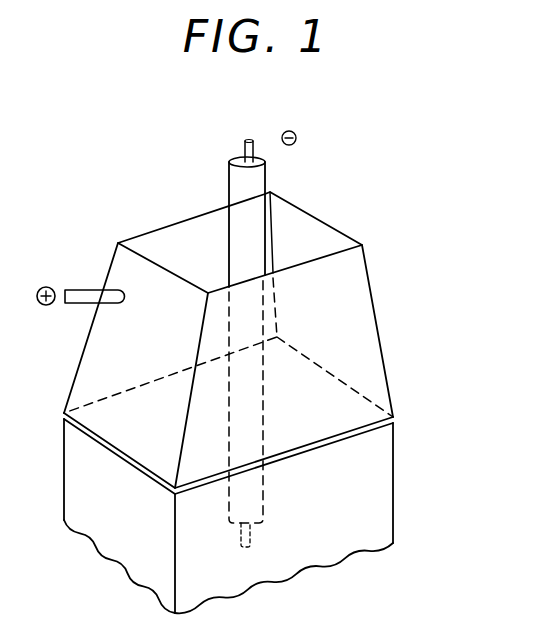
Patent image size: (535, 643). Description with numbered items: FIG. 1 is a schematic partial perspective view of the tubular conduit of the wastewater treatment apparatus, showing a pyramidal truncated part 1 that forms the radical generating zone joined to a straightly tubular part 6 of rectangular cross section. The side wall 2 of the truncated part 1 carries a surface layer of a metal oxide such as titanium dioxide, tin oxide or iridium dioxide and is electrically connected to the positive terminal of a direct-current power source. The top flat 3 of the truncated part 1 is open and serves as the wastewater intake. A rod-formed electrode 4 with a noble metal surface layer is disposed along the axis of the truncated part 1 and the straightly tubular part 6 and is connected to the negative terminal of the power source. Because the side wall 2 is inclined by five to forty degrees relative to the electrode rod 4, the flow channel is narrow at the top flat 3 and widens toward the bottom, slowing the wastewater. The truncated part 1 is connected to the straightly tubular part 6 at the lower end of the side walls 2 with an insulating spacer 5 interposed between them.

The truncated part 1 is at (353, 312).
The side wall 2 is at (385, 366).
The top flat 3 is at (297, 225).
The rod-formed electrode 4 is at (245, 192).
The insulating spacer 5 is at (393, 420).
The straightly tubular part 6 is at (375, 518).